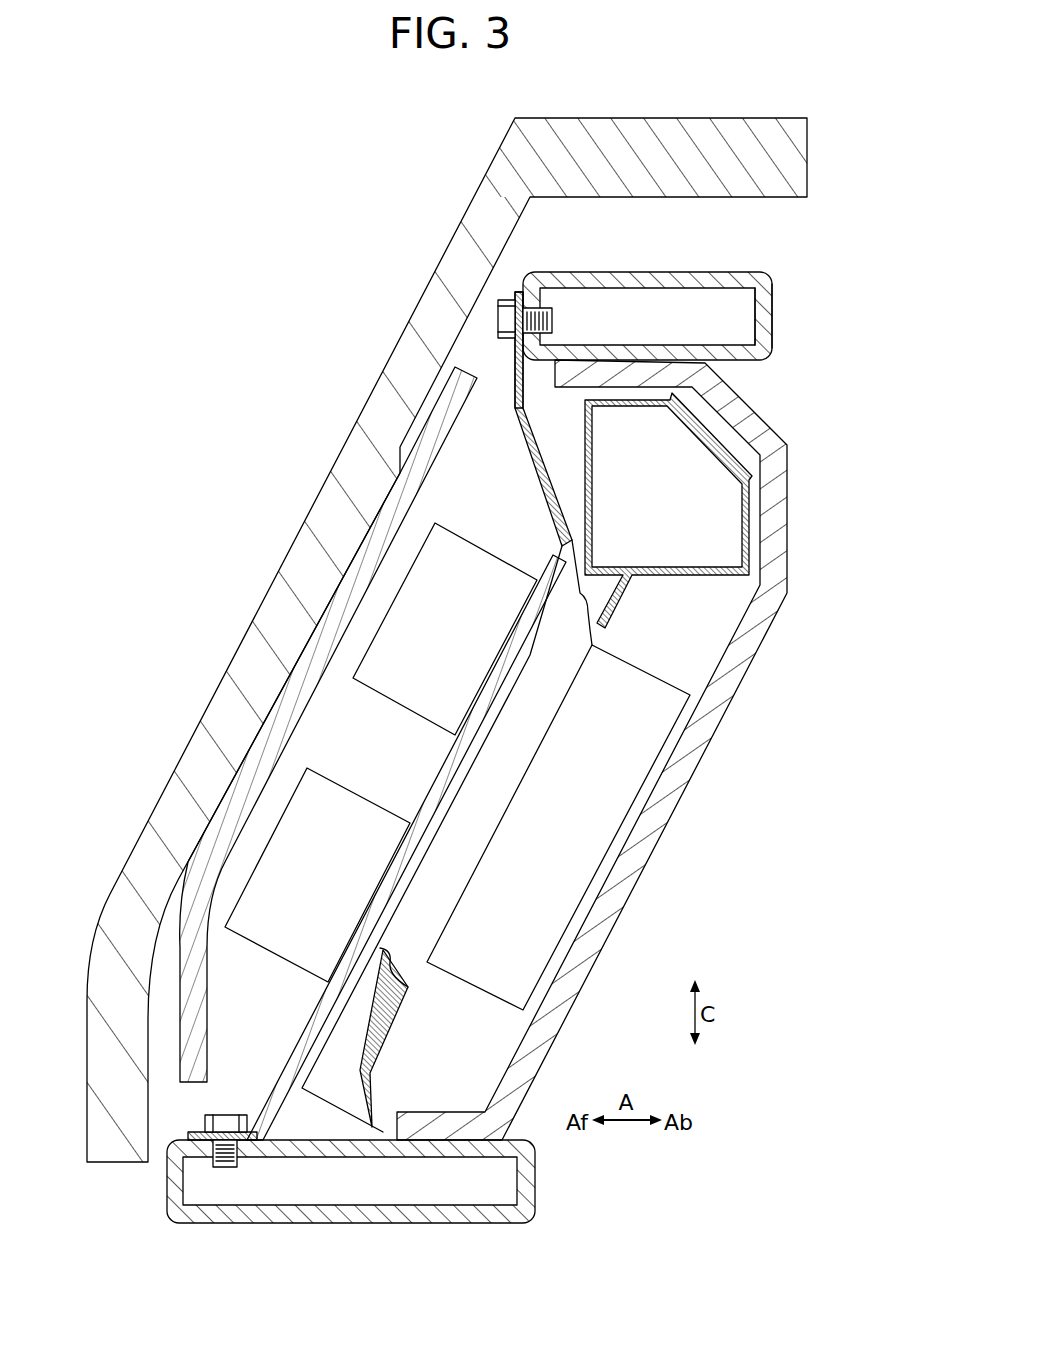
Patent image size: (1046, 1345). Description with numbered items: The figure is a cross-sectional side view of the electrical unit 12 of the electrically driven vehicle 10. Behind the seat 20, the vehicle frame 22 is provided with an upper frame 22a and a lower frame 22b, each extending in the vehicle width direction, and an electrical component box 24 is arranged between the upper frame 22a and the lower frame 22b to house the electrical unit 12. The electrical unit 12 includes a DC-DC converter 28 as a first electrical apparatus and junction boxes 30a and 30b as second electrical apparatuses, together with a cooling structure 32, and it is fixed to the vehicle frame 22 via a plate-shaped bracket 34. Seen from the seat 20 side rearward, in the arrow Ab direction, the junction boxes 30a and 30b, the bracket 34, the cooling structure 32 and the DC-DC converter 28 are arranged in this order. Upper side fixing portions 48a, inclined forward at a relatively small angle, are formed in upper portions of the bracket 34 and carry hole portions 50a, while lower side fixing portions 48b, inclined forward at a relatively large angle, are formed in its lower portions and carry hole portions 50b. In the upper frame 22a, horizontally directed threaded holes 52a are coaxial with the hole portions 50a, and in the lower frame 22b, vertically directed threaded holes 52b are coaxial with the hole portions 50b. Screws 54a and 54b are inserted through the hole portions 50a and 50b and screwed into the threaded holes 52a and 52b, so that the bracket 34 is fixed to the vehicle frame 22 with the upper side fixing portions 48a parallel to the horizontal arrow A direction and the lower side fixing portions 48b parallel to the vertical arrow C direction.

The electrically driven vehicle 10 is at (218, 289).
The electrical unit 12 is at (458, 1095).
The seat 20 is at (318, 510).
The vehicle frame 22 is at (680, 280).
The upper frame 22a is at (766, 311).
The lower frame 22b is at (530, 1177).
The electrical component box 24 is at (747, 660).
The DC-DC converter 28 is at (587, 917).
The junction box 30a is at (302, 815).
The junction box 30b is at (427, 568).
The cooling structure 32 is at (620, 618).
The bracket 34 is at (503, 393).
The upper side fixing portion 48a is at (513, 358).
The lower side fixing portion 48b is at (195, 1130).
The hole portion 50a is at (475, 281).
The hole portion 50b is at (250, 1172).
The threaded hole 52a is at (512, 322).
The threaded hole 52b is at (230, 1145).
The screw 54a is at (496, 327).
The screw 54b is at (232, 1160).